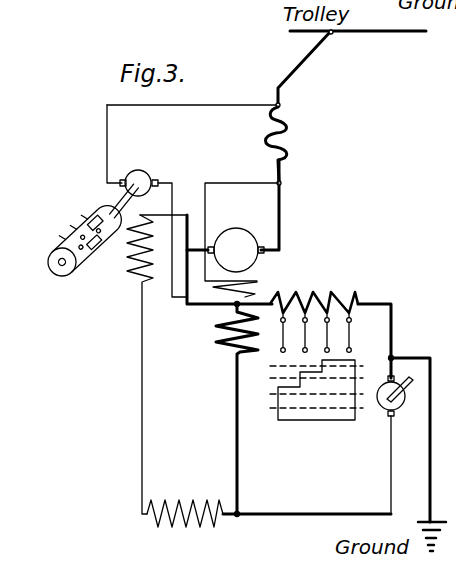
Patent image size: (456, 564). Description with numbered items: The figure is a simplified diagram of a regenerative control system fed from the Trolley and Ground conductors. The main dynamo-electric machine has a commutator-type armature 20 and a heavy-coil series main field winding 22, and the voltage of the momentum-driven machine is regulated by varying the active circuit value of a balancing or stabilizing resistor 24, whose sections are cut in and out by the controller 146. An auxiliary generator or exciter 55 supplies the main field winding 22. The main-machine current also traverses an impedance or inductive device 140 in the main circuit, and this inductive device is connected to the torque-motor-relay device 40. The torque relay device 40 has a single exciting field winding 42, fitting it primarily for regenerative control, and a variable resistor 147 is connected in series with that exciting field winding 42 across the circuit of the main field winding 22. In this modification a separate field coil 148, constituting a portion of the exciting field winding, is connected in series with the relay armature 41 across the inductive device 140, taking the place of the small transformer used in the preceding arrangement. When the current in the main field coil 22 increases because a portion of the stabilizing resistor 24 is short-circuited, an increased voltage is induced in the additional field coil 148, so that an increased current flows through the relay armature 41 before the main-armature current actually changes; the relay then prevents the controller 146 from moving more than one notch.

The commutator-type armature 20 is at (244, 240).
The main field winding 22 is at (232, 346).
The stabilizing resistor 24 is at (326, 300).
The torque-motor-relay device 40 is at (95, 181).
The relay armature 41 is at (143, 178).
The relay exciting field winding 42 is at (128, 273).
The exciter 55 is at (401, 410).
The inductive device 140 is at (287, 142).
The controller 146 is at (312, 424).
The variable resistor 147 is at (185, 529).
The additional field coil 148 is at (250, 297).